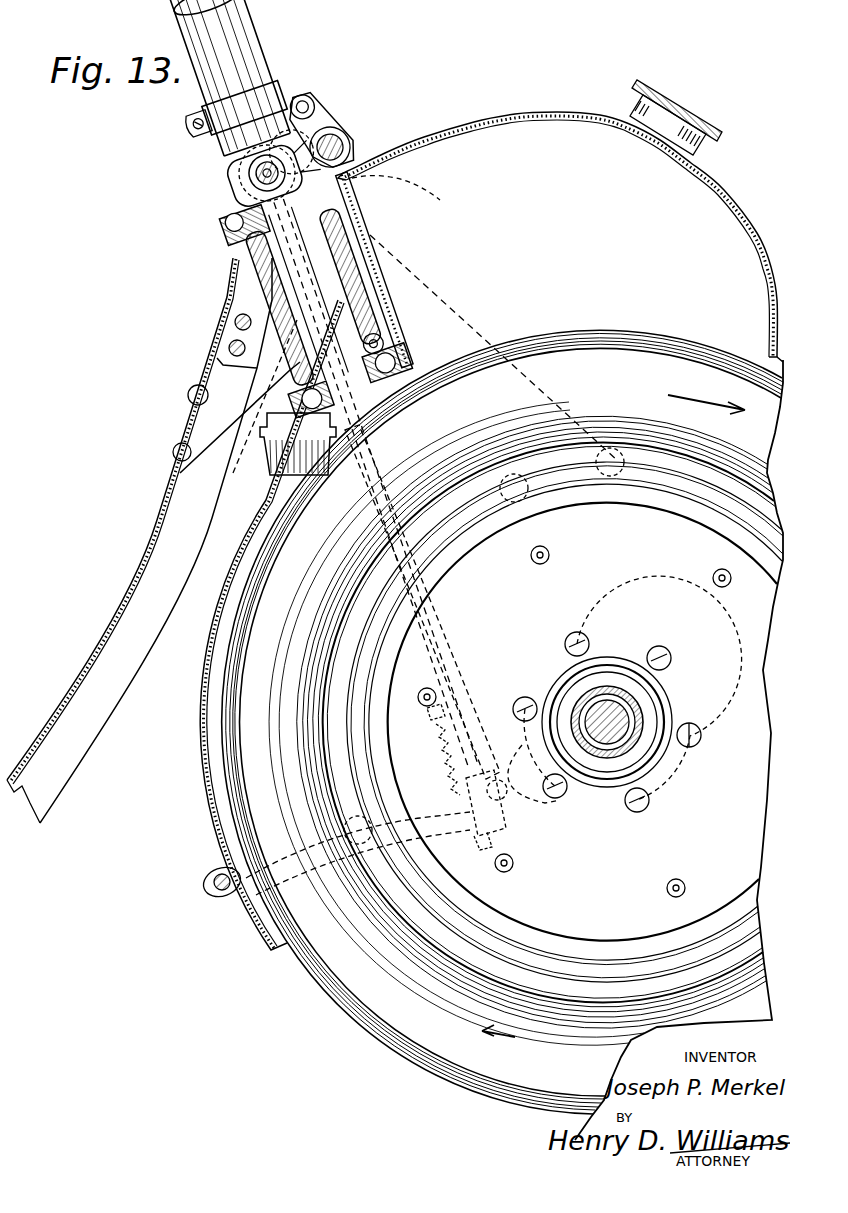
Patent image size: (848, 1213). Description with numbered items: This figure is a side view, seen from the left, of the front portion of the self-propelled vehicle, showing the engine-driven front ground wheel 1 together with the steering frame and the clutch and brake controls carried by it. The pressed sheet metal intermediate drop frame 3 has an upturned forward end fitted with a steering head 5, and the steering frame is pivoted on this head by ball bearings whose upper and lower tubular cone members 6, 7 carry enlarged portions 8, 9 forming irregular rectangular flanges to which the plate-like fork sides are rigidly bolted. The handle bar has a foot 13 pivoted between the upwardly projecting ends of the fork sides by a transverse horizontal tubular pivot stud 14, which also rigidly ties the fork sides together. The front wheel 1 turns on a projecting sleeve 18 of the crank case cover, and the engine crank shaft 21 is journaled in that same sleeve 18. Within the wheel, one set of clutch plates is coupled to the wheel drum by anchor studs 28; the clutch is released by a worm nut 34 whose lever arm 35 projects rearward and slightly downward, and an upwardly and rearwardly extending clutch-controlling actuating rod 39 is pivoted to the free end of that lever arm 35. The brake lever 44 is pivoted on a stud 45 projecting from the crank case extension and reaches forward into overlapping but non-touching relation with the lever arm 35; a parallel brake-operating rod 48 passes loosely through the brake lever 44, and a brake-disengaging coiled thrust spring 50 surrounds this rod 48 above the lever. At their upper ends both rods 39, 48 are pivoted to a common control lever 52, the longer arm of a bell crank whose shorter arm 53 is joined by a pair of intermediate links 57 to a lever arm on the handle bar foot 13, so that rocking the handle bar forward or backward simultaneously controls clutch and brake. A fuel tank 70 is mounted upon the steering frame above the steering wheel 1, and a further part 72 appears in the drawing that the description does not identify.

The front ground wheel 1 is at (330, 984).
The intermediate drop frame 3 is at (198, 380).
The steering head 5 is at (335, 247).
The upper tubular cone member 6 is at (335, 218).
The lower tubular cone member 7 is at (322, 366).
The upper enlarged portion 8 is at (226, 236).
The lower enlarged portion 9 is at (396, 345).
The foot 13 is at (272, 140).
The tubular pivot stud 14 is at (250, 175).
The projecting sleeve 18 is at (636, 700).
The crank shaft 21 is at (622, 716).
The anchor studs 28 is at (676, 888).
The worm nut 34 is at (678, 770).
The lever arm 35 is at (545, 797).
The clutch-controlling actuating rod 39 is at (470, 682).
The brake lever 44 is at (462, 782).
The stud 45 is at (342, 866).
The brake-operating rod 48 is at (430, 713).
The brake-disengaging coiled thrust spring 50 is at (438, 748).
The control lever 52 is at (370, 168).
The shorter arm 53 is at (320, 116).
The intermediate links 57 is at (300, 100).
The fuel tank 70 is at (558, 118).
The fork tube 72 is at (238, 44).